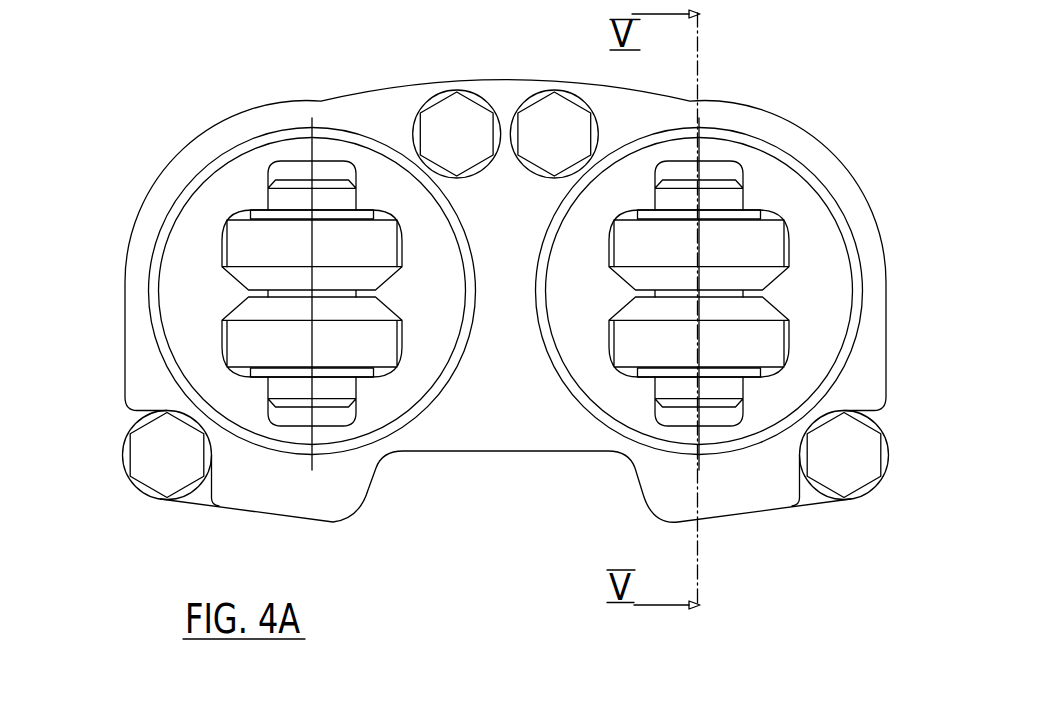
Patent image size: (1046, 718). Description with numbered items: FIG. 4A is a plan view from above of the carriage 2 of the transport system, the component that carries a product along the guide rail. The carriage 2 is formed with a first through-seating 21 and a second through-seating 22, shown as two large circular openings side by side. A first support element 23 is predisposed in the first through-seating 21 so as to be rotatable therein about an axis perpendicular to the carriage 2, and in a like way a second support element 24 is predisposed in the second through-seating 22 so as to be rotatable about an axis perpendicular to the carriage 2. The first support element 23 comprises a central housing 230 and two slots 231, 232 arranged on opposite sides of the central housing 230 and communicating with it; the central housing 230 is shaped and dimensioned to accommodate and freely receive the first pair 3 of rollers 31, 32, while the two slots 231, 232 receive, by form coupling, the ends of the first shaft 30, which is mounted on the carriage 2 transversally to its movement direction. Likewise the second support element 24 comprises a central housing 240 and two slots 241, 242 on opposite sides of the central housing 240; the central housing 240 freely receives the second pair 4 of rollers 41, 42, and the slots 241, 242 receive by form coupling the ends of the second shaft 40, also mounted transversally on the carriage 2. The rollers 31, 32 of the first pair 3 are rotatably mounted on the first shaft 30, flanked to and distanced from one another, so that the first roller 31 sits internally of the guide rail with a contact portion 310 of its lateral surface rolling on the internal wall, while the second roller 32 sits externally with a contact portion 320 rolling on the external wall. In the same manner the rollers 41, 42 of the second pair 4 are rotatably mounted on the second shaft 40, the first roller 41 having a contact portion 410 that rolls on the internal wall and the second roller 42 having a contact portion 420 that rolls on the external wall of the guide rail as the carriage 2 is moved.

The carriage 2 is at (487, 432).
The first through-seating 21 is at (699, 227).
The second through-seating 22 is at (312, 244).
The first support element 23 is at (737, 277).
The second support element 24 is at (312, 235).
The first pair of rollers 3 is at (749, 355).
The second pair of rollers 4 is at (224, 320).
The first roller 31 is at (789, 183).
The first roller 41 is at (221, 190).
The second roller 32 is at (734, 452).
The second roller 42 is at (237, 439).
The slot 231 is at (636, 117).
The slot 241 is at (321, 118).
The slot 232 is at (699, 532).
The slot 242 is at (300, 475).
The central housing 230 is at (802, 259).
The central housing 240 is at (214, 255).
The contact portion 310 is at (791, 234).
The contact portion 410 is at (218, 232).
The contact portion 320 is at (663, 435).
The contact portion 420 is at (210, 398).
The first shaft 30 is at (758, 402).
The second shaft 40 is at (360, 366).